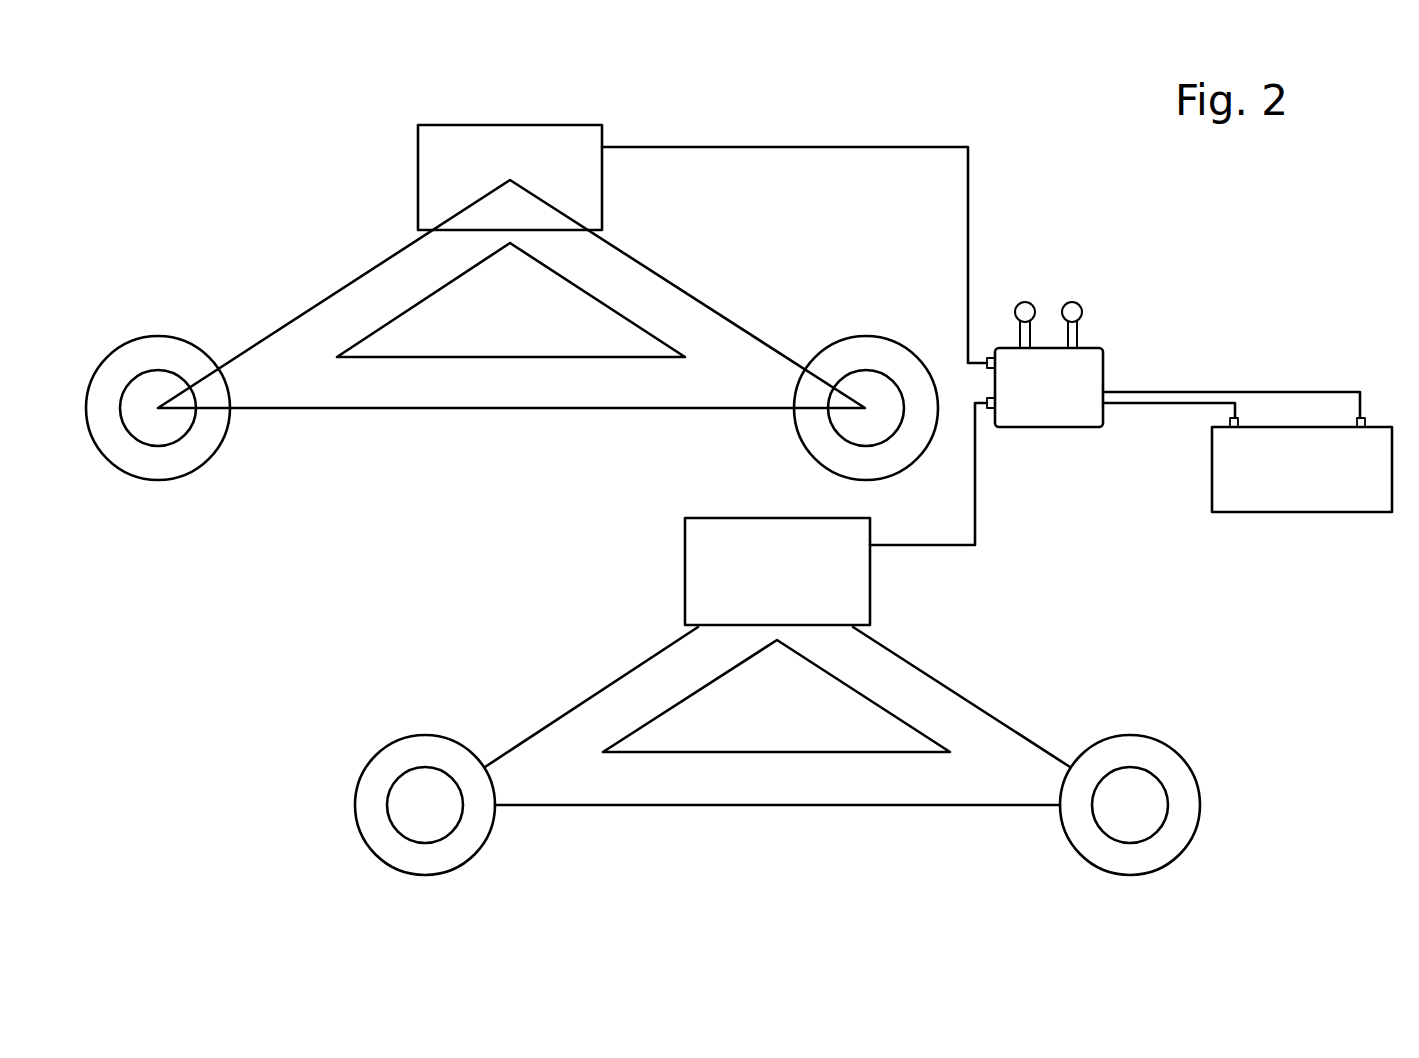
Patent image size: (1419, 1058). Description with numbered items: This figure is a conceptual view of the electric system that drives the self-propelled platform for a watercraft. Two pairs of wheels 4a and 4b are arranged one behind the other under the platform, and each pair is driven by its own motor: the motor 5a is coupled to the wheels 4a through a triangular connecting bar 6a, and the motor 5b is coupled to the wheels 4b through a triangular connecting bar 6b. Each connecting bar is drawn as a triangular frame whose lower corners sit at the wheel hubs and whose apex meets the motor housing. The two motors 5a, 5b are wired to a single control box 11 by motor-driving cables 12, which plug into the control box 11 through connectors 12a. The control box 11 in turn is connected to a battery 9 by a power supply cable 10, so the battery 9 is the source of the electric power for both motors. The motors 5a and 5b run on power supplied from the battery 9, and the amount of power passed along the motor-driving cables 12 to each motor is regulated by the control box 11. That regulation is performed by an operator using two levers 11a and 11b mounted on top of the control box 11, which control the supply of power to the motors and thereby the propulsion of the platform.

The pair of wheels 4a is at (462, 865).
The pair of wheels 4b is at (193, 470).
The motor 5a is at (690, 516).
The motor 5b is at (502, 125).
The triangular connecting bar 6a is at (733, 807).
The triangular connecting bar 6b is at (443, 412).
The battery 9 is at (1272, 512).
The power supply cable 10 is at (1160, 392).
The control box 11 is at (1035, 427).
The lever 11a is at (1078, 338).
The lever 11b is at (1035, 320).
The motor-driving cable 12 is at (969, 178).
The connector 12a is at (990, 400).